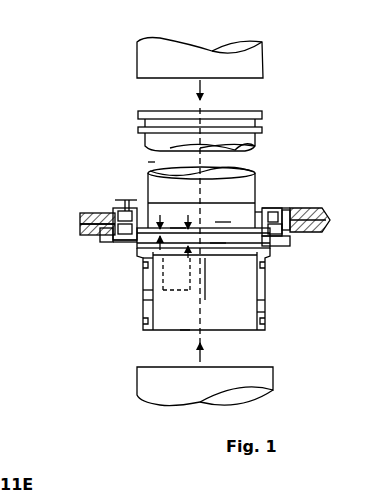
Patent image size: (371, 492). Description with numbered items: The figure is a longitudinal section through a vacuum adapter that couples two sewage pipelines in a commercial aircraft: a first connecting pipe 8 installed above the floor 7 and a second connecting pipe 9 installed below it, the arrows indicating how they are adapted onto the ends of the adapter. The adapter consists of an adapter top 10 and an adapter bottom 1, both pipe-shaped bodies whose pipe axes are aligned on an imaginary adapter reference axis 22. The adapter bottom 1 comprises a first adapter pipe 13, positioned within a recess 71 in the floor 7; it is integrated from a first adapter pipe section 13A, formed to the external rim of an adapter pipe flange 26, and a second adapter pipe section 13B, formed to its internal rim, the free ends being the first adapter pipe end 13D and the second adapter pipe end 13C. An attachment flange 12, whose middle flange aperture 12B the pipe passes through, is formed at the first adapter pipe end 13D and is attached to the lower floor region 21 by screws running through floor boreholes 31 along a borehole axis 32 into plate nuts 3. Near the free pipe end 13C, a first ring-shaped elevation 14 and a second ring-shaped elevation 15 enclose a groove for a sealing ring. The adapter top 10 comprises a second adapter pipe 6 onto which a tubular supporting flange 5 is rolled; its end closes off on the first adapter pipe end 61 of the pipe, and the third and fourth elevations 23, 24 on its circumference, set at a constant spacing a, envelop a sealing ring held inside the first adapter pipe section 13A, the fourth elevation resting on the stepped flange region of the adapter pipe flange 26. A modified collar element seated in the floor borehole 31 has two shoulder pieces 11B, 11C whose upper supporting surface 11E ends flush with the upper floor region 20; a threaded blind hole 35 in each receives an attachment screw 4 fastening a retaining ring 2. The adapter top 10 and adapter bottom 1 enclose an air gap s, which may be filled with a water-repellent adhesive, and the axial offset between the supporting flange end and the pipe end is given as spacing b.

The adapter bottom 1 is at (268, 300).
The retaining ring 2 is at (256, 232).
The plate nut 3 is at (290, 244).
The attachment screw 4 is at (284, 209).
The supporting flange 5 is at (257, 214).
The second adapter pipe 6 is at (256, 181).
The floor 7 is at (320, 210).
The first connecting pipe 8 is at (252, 62).
The second connecting pipe 9 is at (266, 380).
The adapter top 10 is at (152, 160).
The shoulder piece 11B is at (92, 222).
The shoulder piece 11C is at (300, 220).
The upper supporting surface 11E is at (273, 209).
The attachment flange 12 is at (100, 240).
The flange aperture 12B is at (223, 224).
The first adapter pipe 13 is at (270, 304).
The first adapter pipe section 13A is at (134, 243).
The second adapter pipe section 13B is at (145, 306).
The second adapter pipe end 13C is at (185, 335).
The first adapter pipe end 13D is at (136, 244).
The first ring-shaped elevation 14 is at (272, 314).
The second ring-shaped elevation 15 is at (143, 302).
The upper floor region 20 is at (80, 212).
The lower floor region 21 is at (100, 232).
The adapter reference axis 22 is at (206, 300).
The third ring-shaped elevation 23 is at (178, 232).
The fourth ring-shaped elevation 24 is at (218, 244).
The adapter pipe flange 26 is at (148, 264).
The floor borehole 31 is at (114, 206).
The borehole axis 32 is at (120, 200).
The blind hole 35 is at (142, 199).
The first adapter pipe end 61 is at (178, 256).
The recess 71 is at (292, 222).
The spacing a is at (193, 232).
The spacing b is at (165, 228).
The gap s is at (273, 238).